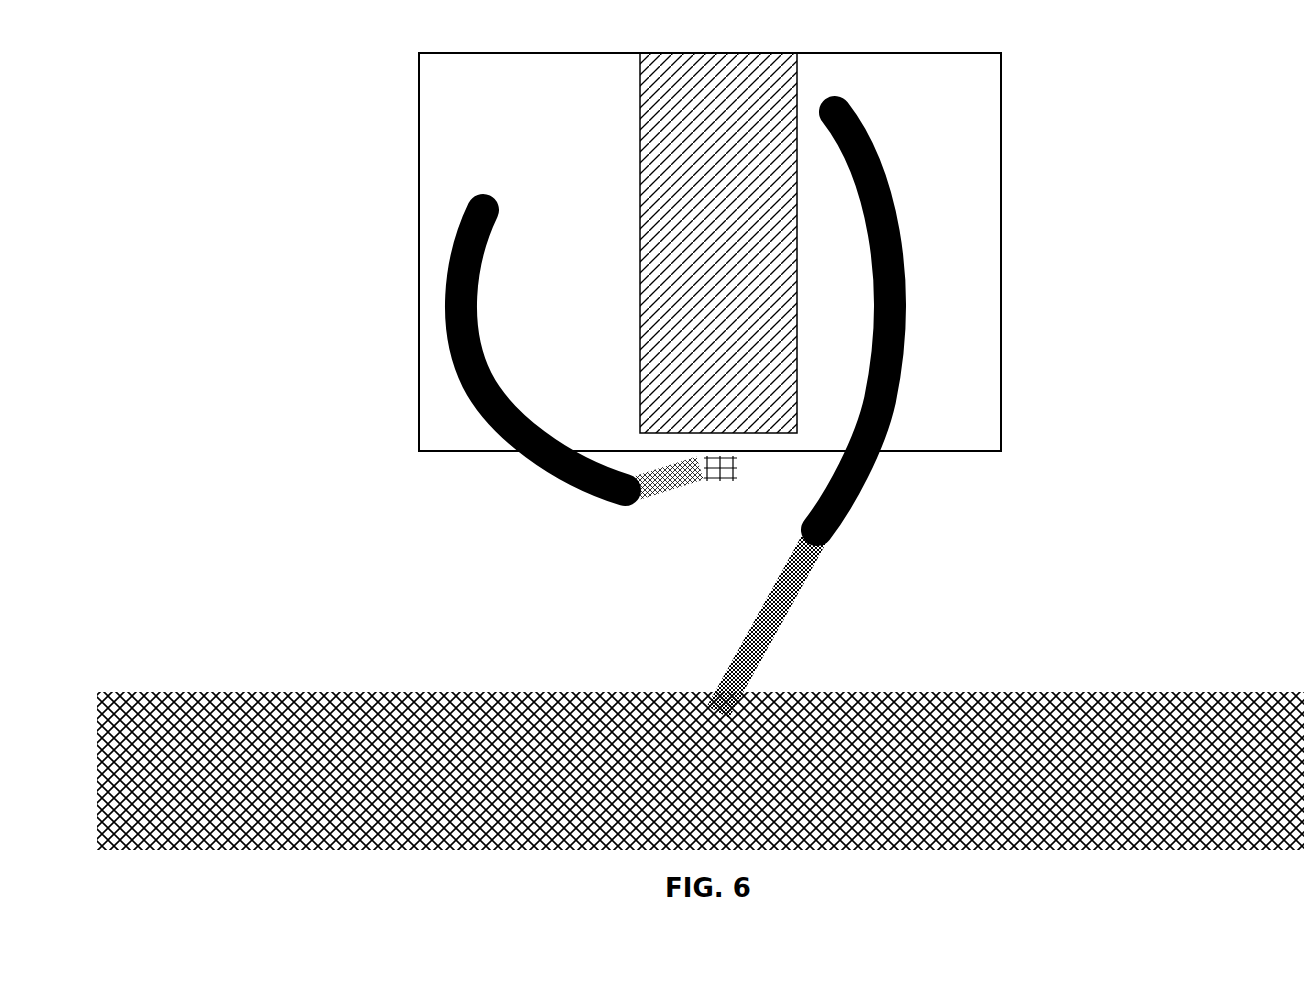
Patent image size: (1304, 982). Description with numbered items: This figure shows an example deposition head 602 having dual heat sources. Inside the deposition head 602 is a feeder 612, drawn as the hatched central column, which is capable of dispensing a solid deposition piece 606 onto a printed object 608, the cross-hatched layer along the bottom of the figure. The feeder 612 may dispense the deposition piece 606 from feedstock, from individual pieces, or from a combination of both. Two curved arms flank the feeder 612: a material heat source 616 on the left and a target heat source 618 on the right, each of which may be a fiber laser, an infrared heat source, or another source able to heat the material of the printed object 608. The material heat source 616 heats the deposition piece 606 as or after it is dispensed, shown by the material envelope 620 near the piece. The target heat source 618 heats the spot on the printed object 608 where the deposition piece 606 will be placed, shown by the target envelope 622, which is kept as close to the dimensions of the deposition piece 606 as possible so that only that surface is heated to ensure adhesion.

The deposition head 602 is at (1003, 252).
The deposition piece 606 is at (724, 487).
The printed object 608 is at (700, 771).
The feeder 612 is at (718, 243).
The material heat source 616 is at (548, 483).
The target heat source 618 is at (870, 468).
The material envelope 620 is at (650, 502).
The target envelope 622 is at (812, 580).